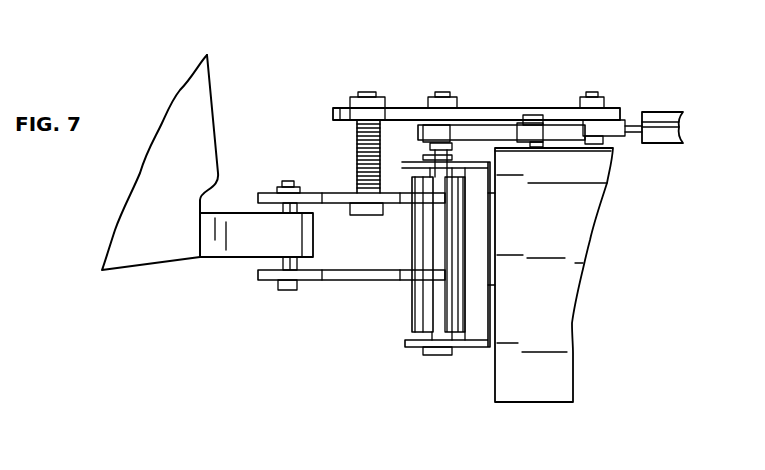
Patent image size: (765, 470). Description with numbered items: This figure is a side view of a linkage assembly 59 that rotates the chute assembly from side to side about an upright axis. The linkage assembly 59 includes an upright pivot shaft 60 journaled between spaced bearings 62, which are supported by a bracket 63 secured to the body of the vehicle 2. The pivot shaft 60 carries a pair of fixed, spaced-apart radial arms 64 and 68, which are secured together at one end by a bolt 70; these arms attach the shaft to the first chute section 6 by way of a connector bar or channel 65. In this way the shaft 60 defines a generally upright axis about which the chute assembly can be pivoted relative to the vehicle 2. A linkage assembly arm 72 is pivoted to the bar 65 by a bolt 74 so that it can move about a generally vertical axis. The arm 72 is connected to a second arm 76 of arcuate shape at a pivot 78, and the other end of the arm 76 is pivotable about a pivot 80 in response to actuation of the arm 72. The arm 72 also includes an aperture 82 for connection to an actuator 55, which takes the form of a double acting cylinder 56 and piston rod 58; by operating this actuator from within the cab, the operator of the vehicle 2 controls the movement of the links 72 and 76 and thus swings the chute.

The vehicle 2 is at (540, 402).
The first chute section 6 is at (166, 255).
The actuator 55 is at (630, 110).
The double acting cylinder 56 is at (670, 112).
The piston rod 58 is at (630, 134).
The linkage assembly 59 is at (465, 70).
The upright pivot shaft 60 is at (420, 227).
The bearings 62 is at (425, 157).
The bracket 63 is at (408, 348).
The radial arm 64 is at (327, 193).
The connector bar 65 is at (245, 217).
The radial arm 68 is at (322, 272).
The bolt 70 is at (280, 183).
The linkage assembly arm 72 is at (486, 108).
The bolt 74 is at (362, 93).
The second arm 76 is at (503, 135).
The pivot 78 is at (442, 93).
The pivot 80 is at (531, 117).
The aperture 82 is at (591, 92).